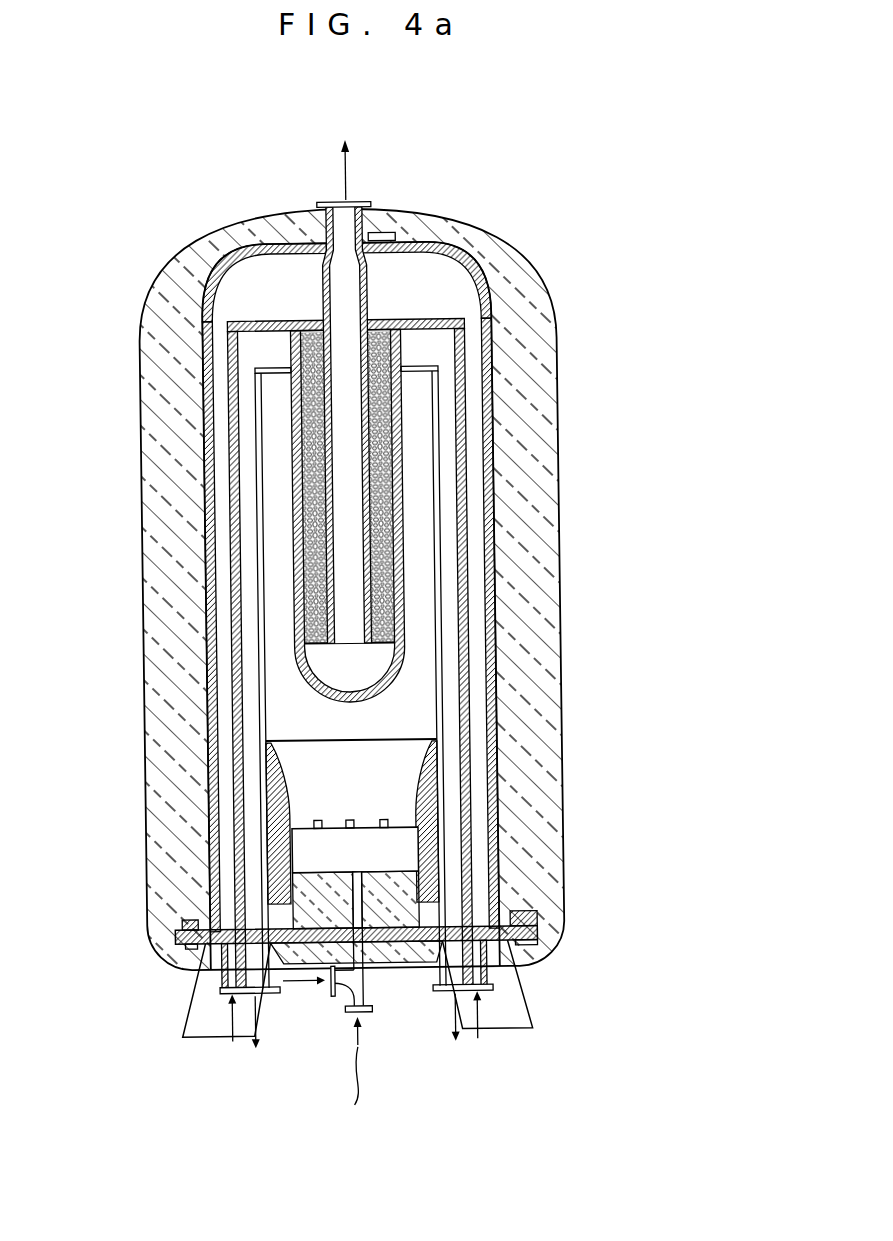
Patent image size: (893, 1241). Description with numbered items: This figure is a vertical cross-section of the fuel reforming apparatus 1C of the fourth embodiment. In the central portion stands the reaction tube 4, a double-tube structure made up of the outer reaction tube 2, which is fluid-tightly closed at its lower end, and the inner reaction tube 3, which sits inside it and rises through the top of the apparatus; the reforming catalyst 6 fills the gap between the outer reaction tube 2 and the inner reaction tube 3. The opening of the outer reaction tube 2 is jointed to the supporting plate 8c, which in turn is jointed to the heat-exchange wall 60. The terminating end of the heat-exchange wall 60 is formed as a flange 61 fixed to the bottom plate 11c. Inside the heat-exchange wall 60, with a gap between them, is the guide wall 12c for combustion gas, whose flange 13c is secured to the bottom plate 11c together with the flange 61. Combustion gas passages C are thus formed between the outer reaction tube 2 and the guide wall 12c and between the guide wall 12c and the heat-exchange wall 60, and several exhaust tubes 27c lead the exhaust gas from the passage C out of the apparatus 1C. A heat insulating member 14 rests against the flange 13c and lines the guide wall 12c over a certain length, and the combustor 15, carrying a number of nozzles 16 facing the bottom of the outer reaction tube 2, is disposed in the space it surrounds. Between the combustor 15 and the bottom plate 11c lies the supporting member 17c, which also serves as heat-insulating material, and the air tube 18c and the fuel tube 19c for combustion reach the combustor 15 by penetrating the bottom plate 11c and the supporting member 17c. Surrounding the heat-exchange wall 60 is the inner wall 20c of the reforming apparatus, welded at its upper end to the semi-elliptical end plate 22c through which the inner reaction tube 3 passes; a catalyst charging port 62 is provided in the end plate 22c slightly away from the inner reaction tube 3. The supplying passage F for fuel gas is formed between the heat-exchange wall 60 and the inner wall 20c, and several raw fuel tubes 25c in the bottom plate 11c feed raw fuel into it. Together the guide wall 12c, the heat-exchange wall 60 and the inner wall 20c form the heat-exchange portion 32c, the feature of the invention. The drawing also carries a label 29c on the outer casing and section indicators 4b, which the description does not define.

The fuel reforming apparatus 1C is at (583, 208).
The outer reaction tube 2 is at (401, 318).
The inner reaction tube 3 is at (375, 268).
The reaction tube 4 is at (365, 452).
The reforming catalyst 6 is at (316, 342).
The supporting plate 8c is at (262, 322).
The bottom plate 11c is at (172, 936).
The guide wall for combustion gas 12c is at (262, 665).
The flange 13c is at (296, 902).
The heat insulating member 14 is at (276, 766).
The combustor 15 is at (415, 750).
The nozzles 16 is at (383, 820).
The supporting member 17c is at (401, 890).
The air tube 18c is at (362, 976).
The fuel tube for combustion 19c is at (367, 1010).
The inner wall of the reforming apparatus 20c is at (212, 707).
The semi-elliptical end plate 22c is at (256, 262).
The raw fuel tubes 25c is at (515, 969).
The exhaust tubes 27c is at (500, 985).
The casing with heat insulating material 29c is at (560, 700).
The heat-exchange portion 32c is at (90, 633).
The heat-exchange wall 60 is at (240, 638).
The flange 61 is at (280, 913).
The catalyst charging port 62 is at (392, 233).
The combustion gas passage C is at (280, 415).
The supplying passage for fuel gas F is at (222, 747).
The section line 4b- 4b is at (131, 501).